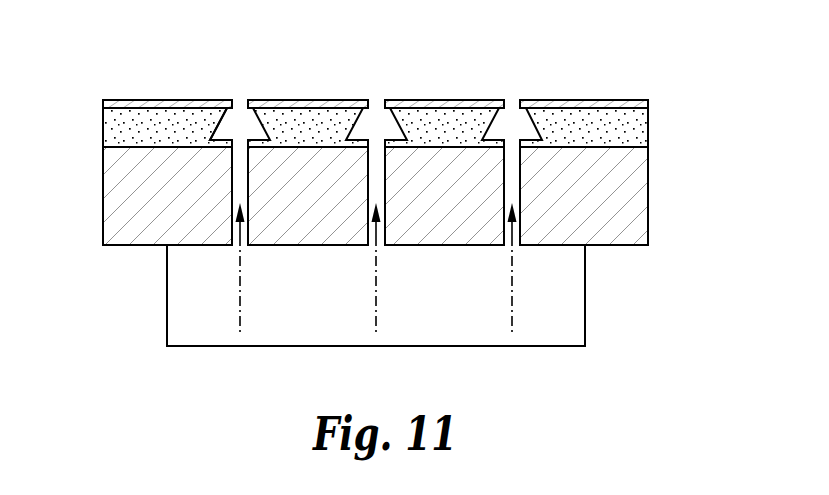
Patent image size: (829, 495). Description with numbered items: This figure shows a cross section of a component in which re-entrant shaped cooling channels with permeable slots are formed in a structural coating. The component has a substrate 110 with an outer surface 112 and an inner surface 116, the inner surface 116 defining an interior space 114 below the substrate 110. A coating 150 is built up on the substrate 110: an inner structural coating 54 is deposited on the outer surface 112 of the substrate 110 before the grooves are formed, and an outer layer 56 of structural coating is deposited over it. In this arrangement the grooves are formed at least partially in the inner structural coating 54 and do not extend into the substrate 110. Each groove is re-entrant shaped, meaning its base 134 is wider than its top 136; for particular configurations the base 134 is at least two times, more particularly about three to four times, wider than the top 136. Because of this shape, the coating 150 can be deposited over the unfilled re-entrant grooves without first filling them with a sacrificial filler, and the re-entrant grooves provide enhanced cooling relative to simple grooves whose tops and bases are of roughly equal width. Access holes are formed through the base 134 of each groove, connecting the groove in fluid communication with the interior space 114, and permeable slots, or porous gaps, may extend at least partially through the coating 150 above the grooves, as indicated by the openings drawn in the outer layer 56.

The inner structural coating 54 is at (640, 127).
The outer layer of structural coating 56 is at (137, 103).
The substrate 110 is at (628, 186).
The outer surface 112 is at (111, 149).
The interior space 114 is at (331, 306).
The inner surface 116 is at (137, 245).
The base 134 is at (531, 147).
The top 136 is at (511, 104).
The coating 150 is at (99, 100).